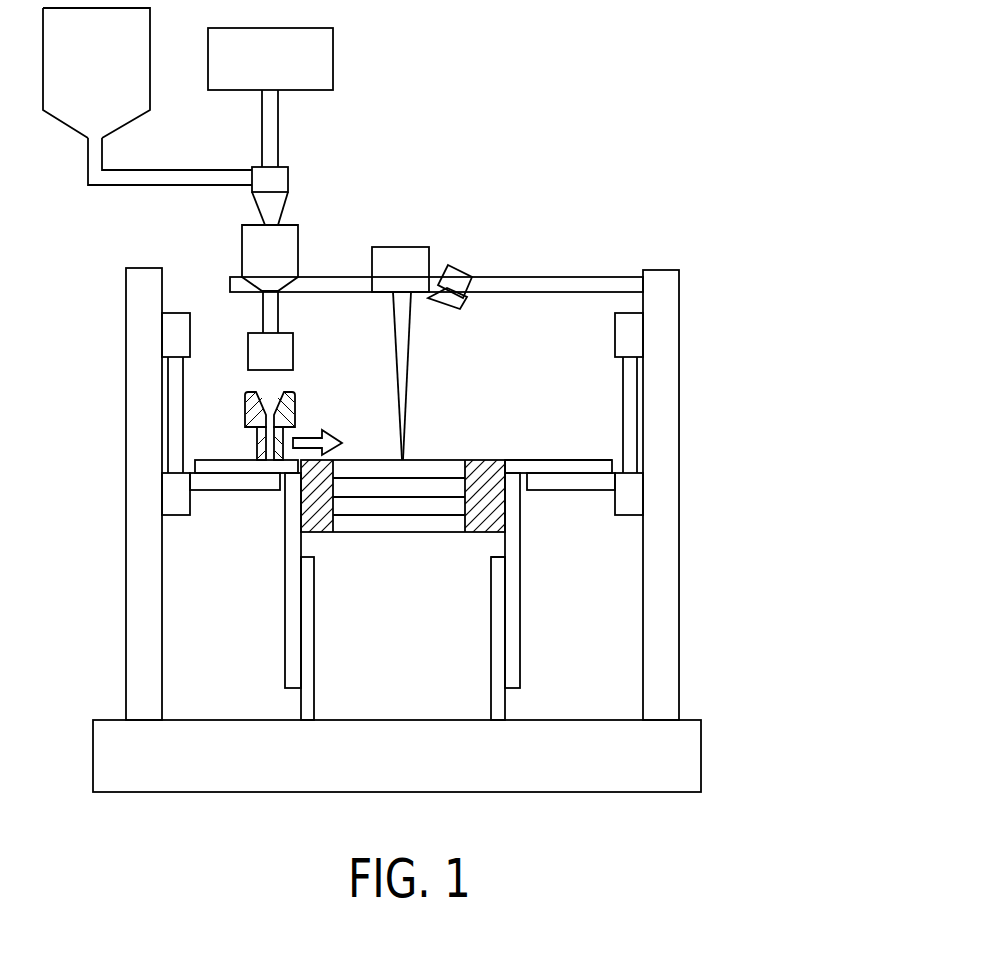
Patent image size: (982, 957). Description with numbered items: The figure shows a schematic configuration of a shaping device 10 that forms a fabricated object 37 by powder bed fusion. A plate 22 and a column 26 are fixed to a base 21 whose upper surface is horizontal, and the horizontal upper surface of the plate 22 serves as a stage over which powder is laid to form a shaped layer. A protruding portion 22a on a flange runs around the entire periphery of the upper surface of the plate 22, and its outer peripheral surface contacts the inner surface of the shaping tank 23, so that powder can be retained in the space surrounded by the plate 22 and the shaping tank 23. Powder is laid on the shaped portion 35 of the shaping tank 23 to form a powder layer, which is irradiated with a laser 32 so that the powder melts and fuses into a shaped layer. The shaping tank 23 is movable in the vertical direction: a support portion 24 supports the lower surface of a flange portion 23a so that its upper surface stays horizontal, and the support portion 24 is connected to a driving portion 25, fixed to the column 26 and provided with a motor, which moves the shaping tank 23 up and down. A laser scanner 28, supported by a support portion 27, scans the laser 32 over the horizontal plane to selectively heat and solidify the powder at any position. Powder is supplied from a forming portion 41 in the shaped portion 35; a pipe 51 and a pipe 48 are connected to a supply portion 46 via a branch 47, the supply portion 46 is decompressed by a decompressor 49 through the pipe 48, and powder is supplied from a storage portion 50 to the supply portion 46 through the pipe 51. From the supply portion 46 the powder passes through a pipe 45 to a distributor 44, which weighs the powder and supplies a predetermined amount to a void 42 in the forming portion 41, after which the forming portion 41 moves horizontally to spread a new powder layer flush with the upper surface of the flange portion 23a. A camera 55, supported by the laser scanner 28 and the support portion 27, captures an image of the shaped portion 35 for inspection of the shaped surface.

The shaping device 10 is at (622, 110).
The base 21 is at (752, 745).
The plate 22 is at (540, 702).
The protruding portion 22a is at (545, 590).
The shaping tank 23 is at (285, 632).
The flange portion 23a is at (568, 460).
The support portion 24 is at (237, 540).
The driving portion 25 is at (167, 415).
The column 26 is at (126, 566).
The support portion 27 is at (518, 275).
The laser scanner 28 is at (400, 247).
The laser 32 is at (460, 340).
The shaped portion 35 is at (436, 439).
The fabricated object 37 is at (422, 578).
The forming portion 41 is at (316, 403).
The void 42 is at (260, 390).
The distributor 44 is at (345, 350).
The pipe 45 is at (328, 314).
The supply portion 46 is at (270, 258).
The branch 47 is at (338, 183).
The pipe 48 is at (335, 122).
The decompressor 49 is at (270, 59).
The storage portion 50 is at (96, 73).
The pipe 51 is at (178, 167).
The camera 55 is at (455, 265).